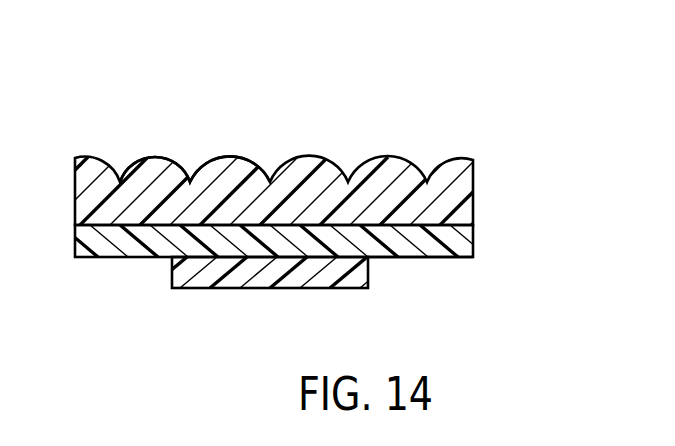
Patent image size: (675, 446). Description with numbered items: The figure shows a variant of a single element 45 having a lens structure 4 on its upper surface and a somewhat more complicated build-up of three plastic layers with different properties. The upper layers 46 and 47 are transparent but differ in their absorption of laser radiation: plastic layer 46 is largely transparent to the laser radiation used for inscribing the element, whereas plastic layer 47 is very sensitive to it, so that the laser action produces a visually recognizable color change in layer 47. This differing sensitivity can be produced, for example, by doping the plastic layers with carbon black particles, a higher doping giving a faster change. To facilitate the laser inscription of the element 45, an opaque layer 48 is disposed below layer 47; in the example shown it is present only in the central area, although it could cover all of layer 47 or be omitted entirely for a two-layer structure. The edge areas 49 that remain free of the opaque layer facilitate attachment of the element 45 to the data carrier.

The lens structure 4 is at (240, 157).
The single element 45 is at (298, 205).
The plastic layer 46 is at (460, 190).
The plastic layer 47 is at (460, 248).
The opaque layer 48 is at (245, 272).
The edge areas 49 is at (437, 258).